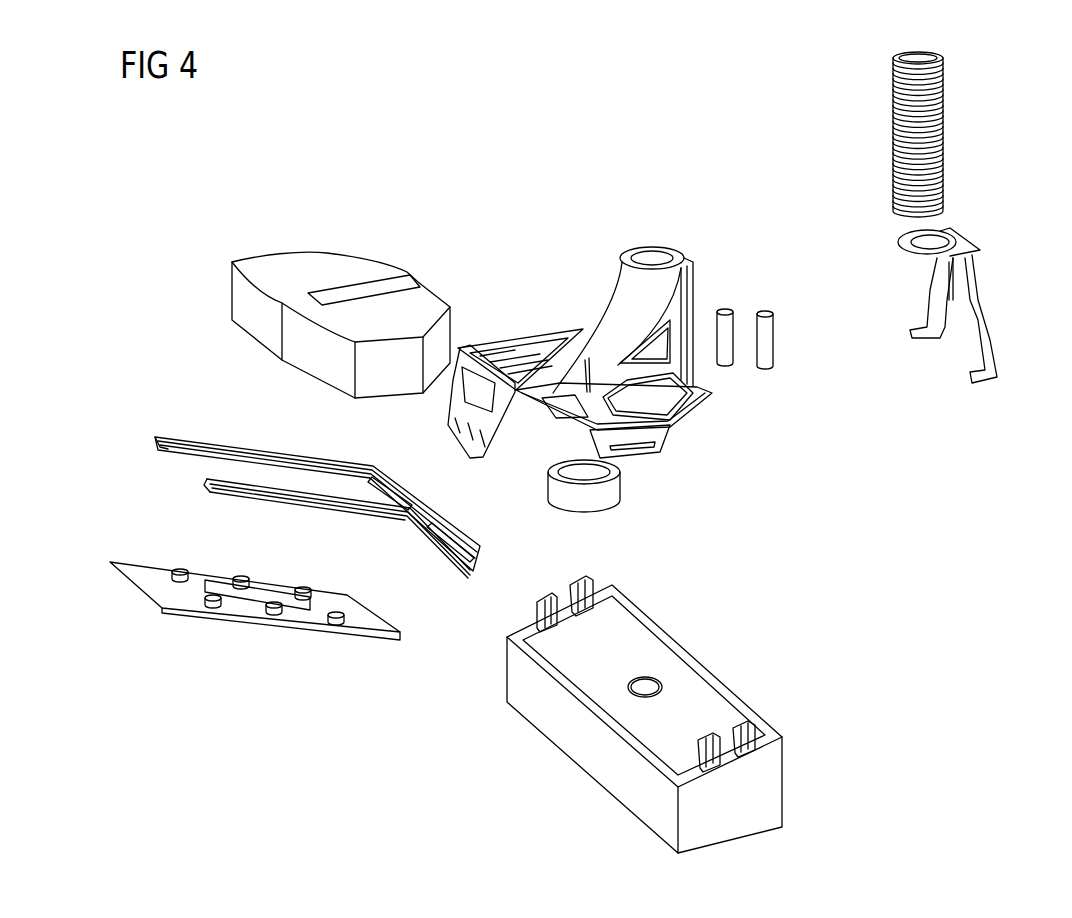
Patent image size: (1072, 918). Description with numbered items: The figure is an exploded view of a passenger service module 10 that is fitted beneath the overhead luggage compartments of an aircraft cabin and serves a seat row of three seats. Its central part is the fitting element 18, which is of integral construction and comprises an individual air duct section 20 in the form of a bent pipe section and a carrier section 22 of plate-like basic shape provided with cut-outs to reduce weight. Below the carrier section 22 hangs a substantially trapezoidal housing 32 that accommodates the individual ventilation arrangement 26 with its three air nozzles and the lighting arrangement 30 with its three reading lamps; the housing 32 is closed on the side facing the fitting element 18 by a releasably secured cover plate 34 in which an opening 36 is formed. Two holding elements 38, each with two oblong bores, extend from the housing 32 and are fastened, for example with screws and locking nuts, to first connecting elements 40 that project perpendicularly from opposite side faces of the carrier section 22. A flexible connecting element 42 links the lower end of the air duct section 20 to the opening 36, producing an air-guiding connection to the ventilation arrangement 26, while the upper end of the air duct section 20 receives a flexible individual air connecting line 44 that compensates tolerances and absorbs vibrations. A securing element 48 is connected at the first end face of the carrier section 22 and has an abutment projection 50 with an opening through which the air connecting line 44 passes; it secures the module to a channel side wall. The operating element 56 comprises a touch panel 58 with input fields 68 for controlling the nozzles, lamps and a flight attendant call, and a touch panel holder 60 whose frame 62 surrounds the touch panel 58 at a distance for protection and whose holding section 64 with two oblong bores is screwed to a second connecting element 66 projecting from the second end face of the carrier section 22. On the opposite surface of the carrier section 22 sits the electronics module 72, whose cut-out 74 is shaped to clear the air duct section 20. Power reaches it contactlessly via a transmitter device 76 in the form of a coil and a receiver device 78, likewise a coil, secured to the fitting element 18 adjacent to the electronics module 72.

The passenger service module 10 is at (780, 533).
The fitting element 18 is at (678, 238).
The individual air duct section 20 is at (617, 310).
The carrier section 22 is at (688, 413).
The individual ventilation arrangement 26 is at (595, 750).
The lighting arrangement 30 is at (557, 712).
The housing 32 is at (770, 780).
The cover plate 34 is at (652, 657).
The opening 36 is at (637, 687).
The holding elements 38 is at (598, 583).
The first connecting elements 40 is at (505, 345).
The flexible connecting element 42 is at (572, 507).
The individual air connecting line 44 is at (940, 132).
The securing element 48 is at (982, 312).
The abutment projection 50 is at (898, 240).
The operating element 56 is at (220, 627).
The touch panel 58 is at (303, 627).
The touch panel holder 60 is at (238, 437).
The frame 62 is at (287, 453).
The holding section 64 is at (442, 527).
The second connecting element 66 is at (450, 410).
The input fields 68 is at (240, 573).
The electronics module 72 is at (303, 267).
The cut-out 74 is at (362, 297).
The transmitter device 76 is at (725, 308).
The receiver device 78 is at (765, 310).